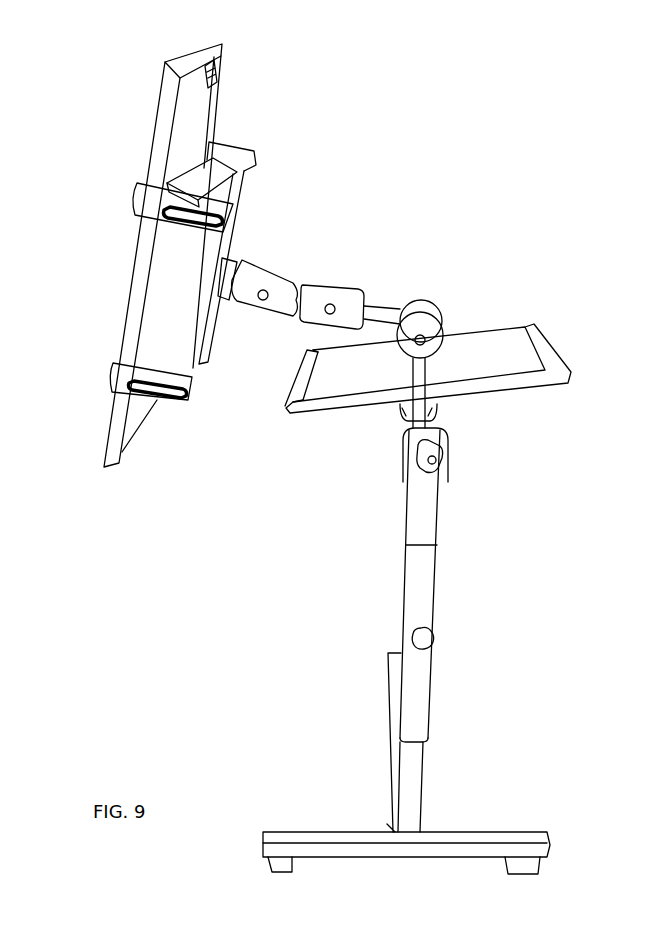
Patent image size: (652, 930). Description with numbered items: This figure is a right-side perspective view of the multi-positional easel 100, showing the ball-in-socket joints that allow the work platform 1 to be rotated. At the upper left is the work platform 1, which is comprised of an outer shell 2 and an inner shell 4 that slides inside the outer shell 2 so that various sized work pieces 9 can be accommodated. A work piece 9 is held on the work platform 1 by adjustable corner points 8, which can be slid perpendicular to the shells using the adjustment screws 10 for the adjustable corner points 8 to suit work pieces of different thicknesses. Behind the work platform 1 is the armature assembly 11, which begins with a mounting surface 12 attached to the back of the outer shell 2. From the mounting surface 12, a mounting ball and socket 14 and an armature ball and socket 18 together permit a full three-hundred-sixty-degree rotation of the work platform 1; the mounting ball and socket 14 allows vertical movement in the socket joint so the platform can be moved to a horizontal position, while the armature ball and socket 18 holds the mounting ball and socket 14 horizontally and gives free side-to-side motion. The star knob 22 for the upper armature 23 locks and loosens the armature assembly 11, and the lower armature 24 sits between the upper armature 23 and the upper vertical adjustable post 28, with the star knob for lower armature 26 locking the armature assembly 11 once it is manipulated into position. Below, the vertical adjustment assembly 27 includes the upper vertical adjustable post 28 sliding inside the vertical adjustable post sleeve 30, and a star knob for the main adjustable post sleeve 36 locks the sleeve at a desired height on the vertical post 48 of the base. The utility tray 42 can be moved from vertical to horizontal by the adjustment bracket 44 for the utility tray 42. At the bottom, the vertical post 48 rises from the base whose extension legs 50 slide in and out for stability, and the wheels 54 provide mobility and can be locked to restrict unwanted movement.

The multi-positional easel 100 is at (233, 676).
The work platform 1 is at (245, 197).
The outer shell 2 is at (170, 288).
The inner shell 4 is at (238, 145).
The adjustable corner points 8 is at (142, 183).
The work piece 9 is at (221, 76).
The adjustment screws for the adjustable corner points 10 is at (166, 206).
The armature assembly 11 is at (316, 252).
The mounting surface 12 is at (229, 307).
The mounting ball and socket 14 is at (263, 260).
The armature ball and socket 18 is at (330, 287).
The star knob for upper armature 22 is at (430, 303).
The upper armature 23 is at (420, 335).
The lower armature 24 is at (445, 408).
The star knob for lower armature 26 is at (443, 477).
The vertical adjustment assembly 27 is at (455, 607).
The upper vertical adjustable post 28 is at (420, 516).
The vertical adjustable post sleeve 30 is at (412, 690).
The star knob for the main adjustable post sleeve 36 is at (436, 645).
The utility tray 42 is at (306, 414).
The adjustment bracket for the utility tray 44 is at (400, 420).
The vertical post 48 is at (415, 792).
The extension legs 50 is at (393, 655).
The wheels 54 is at (292, 878).